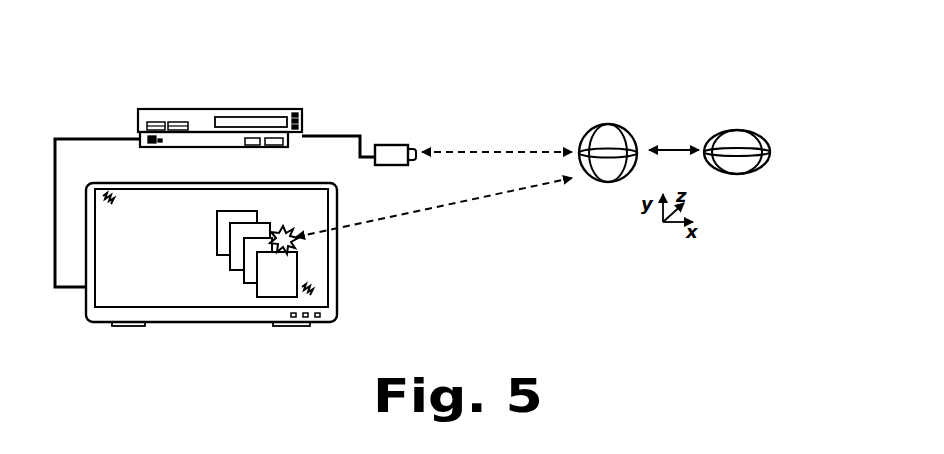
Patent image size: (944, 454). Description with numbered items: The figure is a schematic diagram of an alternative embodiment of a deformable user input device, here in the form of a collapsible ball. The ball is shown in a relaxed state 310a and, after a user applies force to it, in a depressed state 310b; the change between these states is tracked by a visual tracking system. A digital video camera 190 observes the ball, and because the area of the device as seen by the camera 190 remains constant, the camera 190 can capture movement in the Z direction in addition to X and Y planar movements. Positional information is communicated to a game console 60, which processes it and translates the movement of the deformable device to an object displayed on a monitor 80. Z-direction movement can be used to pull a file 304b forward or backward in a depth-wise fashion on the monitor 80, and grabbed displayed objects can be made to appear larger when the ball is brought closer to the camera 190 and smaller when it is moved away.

The game console 60 is at (296, 109).
The digital video camera 190 is at (393, 144).
The monitor 80 is at (338, 210).
The file 304b is at (244, 274).
The relaxed state of deformable user input device 310a is at (610, 124).
The depressed state of deformable user input device 310b is at (741, 130).